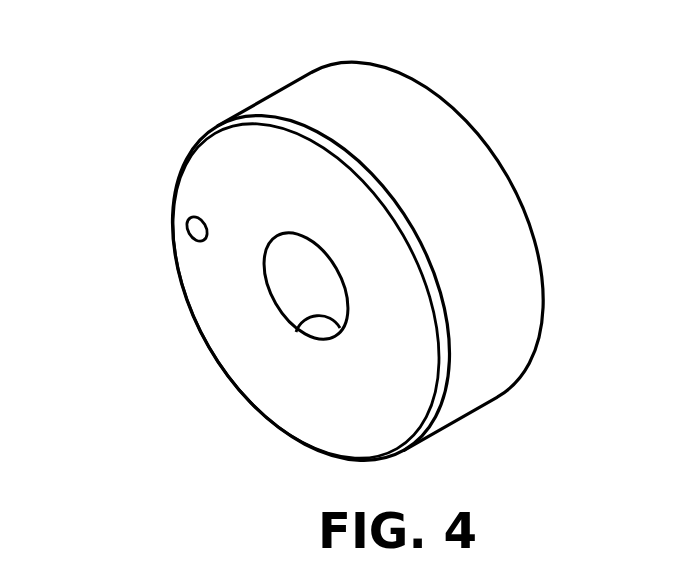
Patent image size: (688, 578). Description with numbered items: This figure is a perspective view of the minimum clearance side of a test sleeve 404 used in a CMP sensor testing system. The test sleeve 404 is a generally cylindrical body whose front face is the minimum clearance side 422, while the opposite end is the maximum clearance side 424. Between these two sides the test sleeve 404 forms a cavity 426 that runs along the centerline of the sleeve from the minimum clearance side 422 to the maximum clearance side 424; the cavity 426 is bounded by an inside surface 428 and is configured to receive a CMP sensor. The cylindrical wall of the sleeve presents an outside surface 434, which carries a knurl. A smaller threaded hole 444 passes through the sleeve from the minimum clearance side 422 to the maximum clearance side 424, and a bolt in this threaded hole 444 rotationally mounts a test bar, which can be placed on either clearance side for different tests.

The test sleeve 404 is at (308, 268).
The maximum clearance side 424 is at (467, 121).
The outside surface 434 is at (480, 373).
The minimum clearance side 422 is at (251, 357).
The cavity 426 is at (290, 289).
The inside surface 428 is at (297, 332).
The threaded hole 444 is at (193, 231).